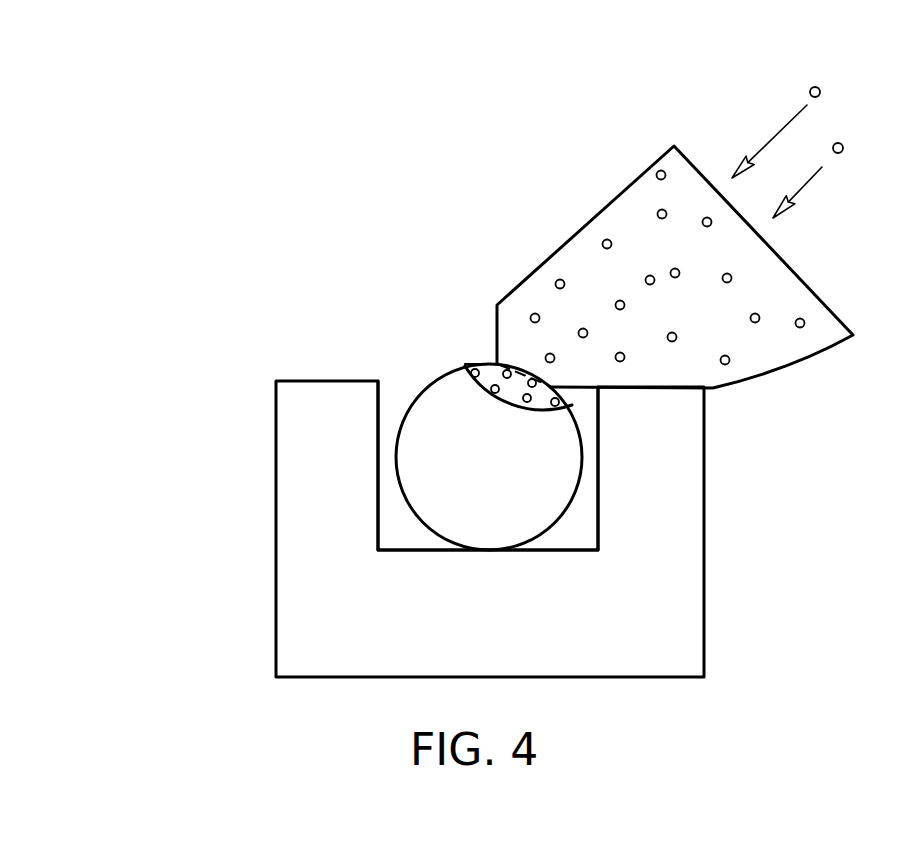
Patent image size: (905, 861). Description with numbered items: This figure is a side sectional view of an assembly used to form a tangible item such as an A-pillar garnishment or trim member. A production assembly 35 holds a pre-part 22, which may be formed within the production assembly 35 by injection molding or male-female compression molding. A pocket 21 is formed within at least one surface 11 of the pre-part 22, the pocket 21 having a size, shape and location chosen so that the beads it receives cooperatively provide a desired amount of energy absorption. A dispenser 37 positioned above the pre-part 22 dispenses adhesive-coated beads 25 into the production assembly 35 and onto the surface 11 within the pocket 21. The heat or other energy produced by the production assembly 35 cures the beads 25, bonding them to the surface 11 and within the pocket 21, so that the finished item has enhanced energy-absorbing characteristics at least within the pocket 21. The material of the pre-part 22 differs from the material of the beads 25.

The surface 11 is at (450, 475).
The pocket 21 is at (490, 362).
The pre-part 22 is at (567, 503).
The beads 25 is at (818, 86).
The production assembly 35 is at (257, 562).
The dispenser 37 is at (616, 202).